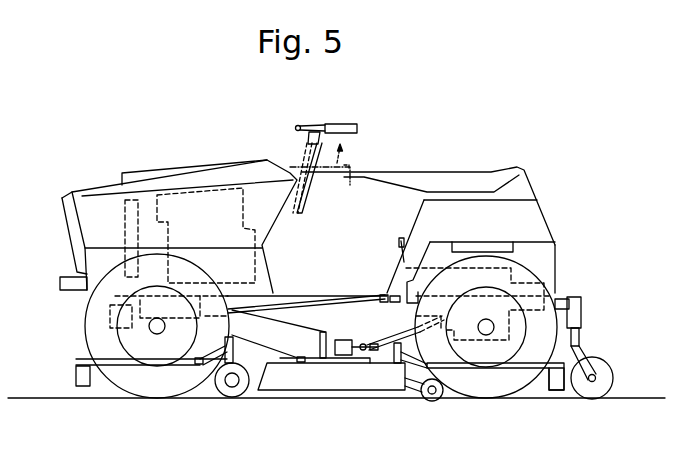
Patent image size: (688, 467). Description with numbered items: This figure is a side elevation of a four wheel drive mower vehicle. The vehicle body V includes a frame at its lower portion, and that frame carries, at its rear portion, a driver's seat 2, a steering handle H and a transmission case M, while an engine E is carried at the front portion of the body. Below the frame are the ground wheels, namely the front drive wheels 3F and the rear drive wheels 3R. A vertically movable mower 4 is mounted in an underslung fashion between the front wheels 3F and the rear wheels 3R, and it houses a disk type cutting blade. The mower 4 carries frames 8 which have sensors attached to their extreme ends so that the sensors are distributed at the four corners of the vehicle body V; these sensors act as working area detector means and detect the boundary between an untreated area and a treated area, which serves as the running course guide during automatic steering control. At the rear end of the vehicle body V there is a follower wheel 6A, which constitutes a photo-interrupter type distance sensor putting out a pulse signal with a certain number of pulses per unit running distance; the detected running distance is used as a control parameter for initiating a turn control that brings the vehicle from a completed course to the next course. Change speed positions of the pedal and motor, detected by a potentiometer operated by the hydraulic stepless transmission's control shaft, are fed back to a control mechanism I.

The driver's seat 2 is at (448, 162).
The engine E is at (218, 200).
The steering handle H is at (345, 125).
The vehicle body V is at (534, 222).
The control mechanism I is at (554, 293).
The front drive wheels 3F is at (90, 331).
The rear drive wheels 3R is at (487, 394).
The frames 8 is at (161, 373).
The mower 4 is at (399, 400).
The transmission case M is at (580, 331).
The follower wheel 6A is at (611, 376).